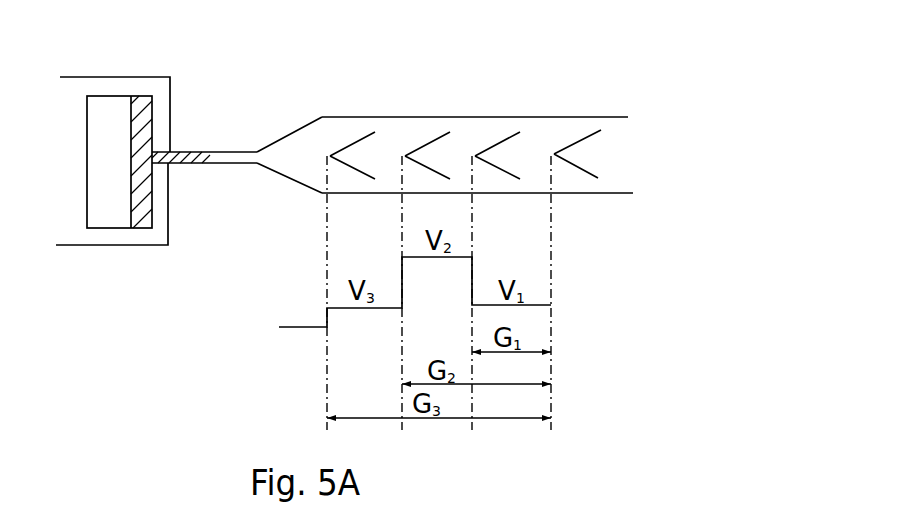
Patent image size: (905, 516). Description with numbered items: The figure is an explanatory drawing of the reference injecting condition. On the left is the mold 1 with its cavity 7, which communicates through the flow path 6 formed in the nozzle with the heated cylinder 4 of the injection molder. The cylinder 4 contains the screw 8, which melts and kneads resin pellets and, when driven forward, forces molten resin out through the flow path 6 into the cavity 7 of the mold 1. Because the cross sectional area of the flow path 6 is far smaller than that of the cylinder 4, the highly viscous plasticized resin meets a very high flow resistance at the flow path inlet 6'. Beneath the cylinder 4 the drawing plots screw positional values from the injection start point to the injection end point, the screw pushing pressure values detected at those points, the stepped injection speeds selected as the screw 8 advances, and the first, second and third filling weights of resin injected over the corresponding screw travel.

The mold 1 is at (77, 86).
The cavity 7 is at (110, 110).
The flow path 6 is at (204, 115).
The flow path inlet 6' is at (287, 125).
The cylinder 4 is at (345, 122).
The screw 8 is at (582, 135).